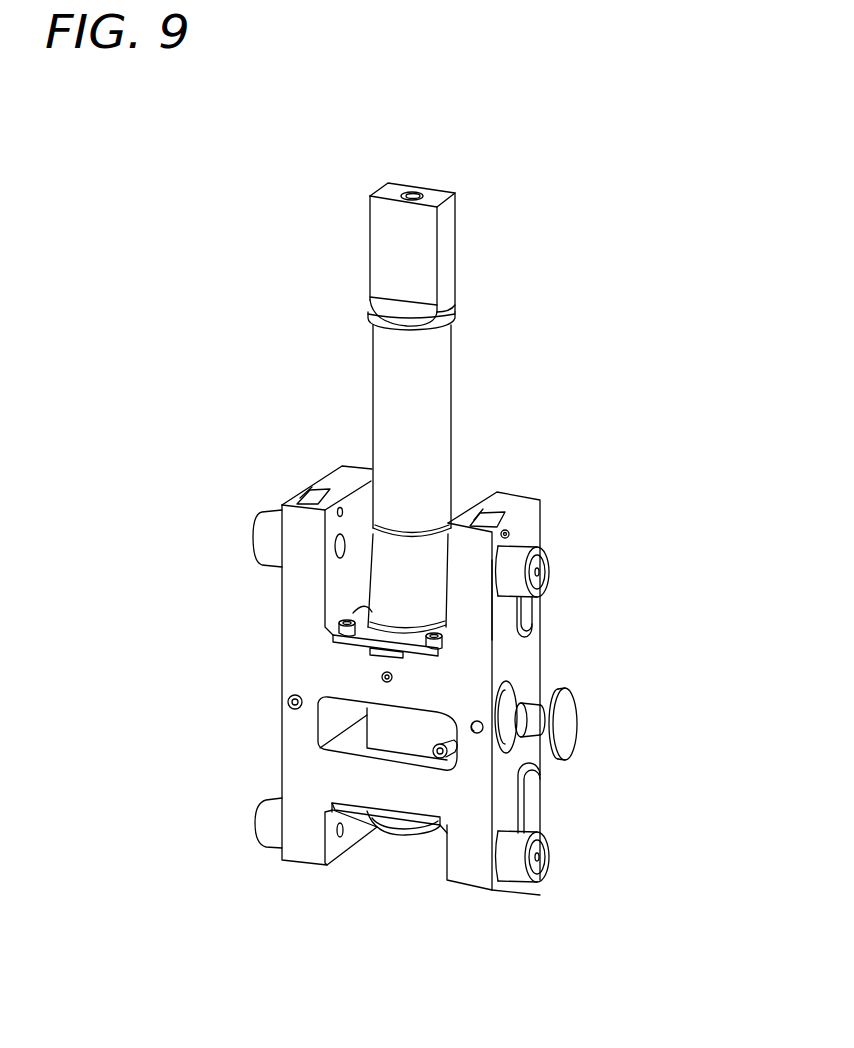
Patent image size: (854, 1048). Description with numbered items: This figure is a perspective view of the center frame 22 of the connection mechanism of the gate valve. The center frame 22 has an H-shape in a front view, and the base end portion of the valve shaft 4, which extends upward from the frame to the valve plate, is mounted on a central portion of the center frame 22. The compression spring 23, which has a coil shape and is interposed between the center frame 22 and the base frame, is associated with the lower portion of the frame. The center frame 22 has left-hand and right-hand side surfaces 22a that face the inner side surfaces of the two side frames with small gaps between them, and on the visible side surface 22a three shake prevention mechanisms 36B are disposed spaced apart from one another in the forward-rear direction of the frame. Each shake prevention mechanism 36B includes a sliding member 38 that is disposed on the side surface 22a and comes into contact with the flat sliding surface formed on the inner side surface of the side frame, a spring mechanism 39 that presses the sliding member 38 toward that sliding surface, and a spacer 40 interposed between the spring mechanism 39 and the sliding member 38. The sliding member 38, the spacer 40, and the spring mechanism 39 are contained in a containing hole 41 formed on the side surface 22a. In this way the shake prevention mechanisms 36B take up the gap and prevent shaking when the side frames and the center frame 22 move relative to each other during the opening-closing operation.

The valve shaft 4 is at (423, 363).
The center frame 22 is at (298, 653).
The side surface 22a is at (517, 667).
The compression spring 23 is at (388, 826).
The shake prevention mechanism 36B is at (545, 618).
The sliding member 38 is at (530, 613).
The spring mechanism 39 is at (445, 760).
The spacer 40 is at (525, 723).
The containing hole 41 is at (506, 722).